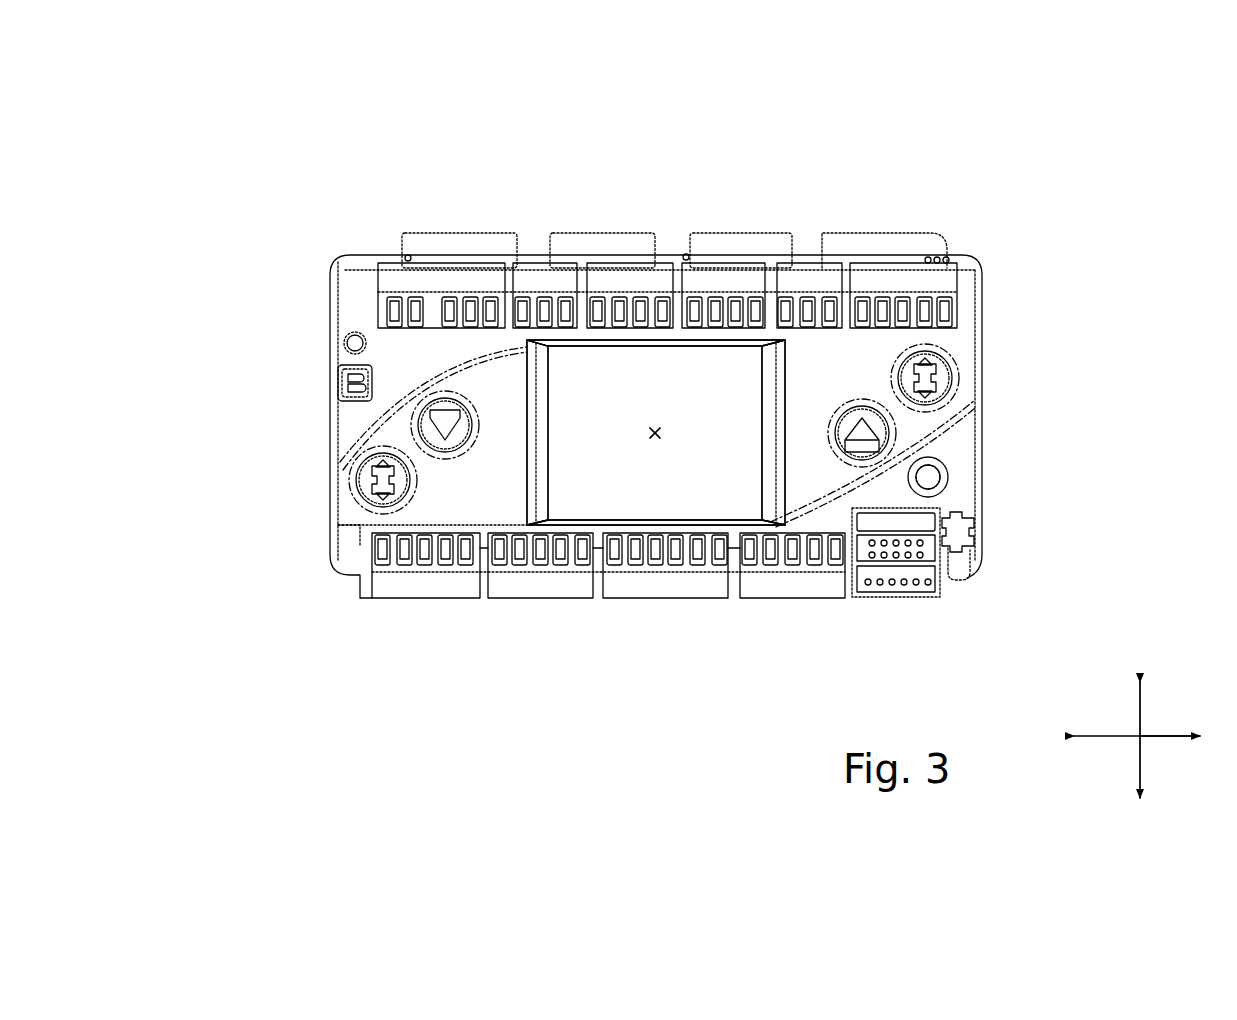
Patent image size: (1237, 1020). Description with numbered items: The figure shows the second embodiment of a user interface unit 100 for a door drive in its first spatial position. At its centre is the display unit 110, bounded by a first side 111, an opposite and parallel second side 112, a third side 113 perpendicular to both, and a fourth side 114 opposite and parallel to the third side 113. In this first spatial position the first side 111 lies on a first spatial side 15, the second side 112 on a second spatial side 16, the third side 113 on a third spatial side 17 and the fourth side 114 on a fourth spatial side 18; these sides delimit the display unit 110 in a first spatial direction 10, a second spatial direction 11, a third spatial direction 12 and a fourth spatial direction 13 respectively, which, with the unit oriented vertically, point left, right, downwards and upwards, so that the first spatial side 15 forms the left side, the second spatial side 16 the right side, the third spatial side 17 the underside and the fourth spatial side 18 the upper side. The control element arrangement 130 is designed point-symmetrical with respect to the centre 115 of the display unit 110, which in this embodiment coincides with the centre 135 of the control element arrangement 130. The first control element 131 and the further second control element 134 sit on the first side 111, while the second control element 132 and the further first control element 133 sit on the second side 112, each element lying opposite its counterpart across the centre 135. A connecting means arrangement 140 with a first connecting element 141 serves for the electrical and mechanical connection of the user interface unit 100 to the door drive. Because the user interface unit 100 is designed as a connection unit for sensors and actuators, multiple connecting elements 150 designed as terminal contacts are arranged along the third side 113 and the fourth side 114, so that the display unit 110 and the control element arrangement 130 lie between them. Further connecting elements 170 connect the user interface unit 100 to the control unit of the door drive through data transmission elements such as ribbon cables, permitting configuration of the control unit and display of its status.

The first spatial direction 10 is at (1106, 738).
The second spatial direction 11 is at (1165, 735).
The third spatial direction 12 is at (1142, 765).
The fourth spatial direction 13 is at (1138, 712).
The first spatial side 15 is at (308, 458).
The second spatial side 16 is at (1035, 395).
The third spatial side 17 is at (700, 658).
The fourth spatial side 18 is at (683, 158).
The user interface unit 100 is at (967, 578).
The display unit 110 is at (617, 414).
The first side 111 is at (538, 362).
The second side 112 is at (772, 376).
The third side 113 is at (571, 528).
The fourth side 114 is at (697, 338).
The centre of the display unit 115 is at (655, 433).
The control element arrangement 130 is at (656, 424).
The first control element 131 is at (420, 418).
The second control element 132 is at (898, 445).
The further first control element 133 is at (952, 370).
The further second control element 134 is at (352, 480).
The centre of the control element arrangement 135 is at (655, 433).
The connecting means arrangement 140 is at (946, 474).
The first connecting element 141 is at (928, 477).
The connecting elements 150 is at (832, 263).
The connecting elements 170 is at (480, 245).